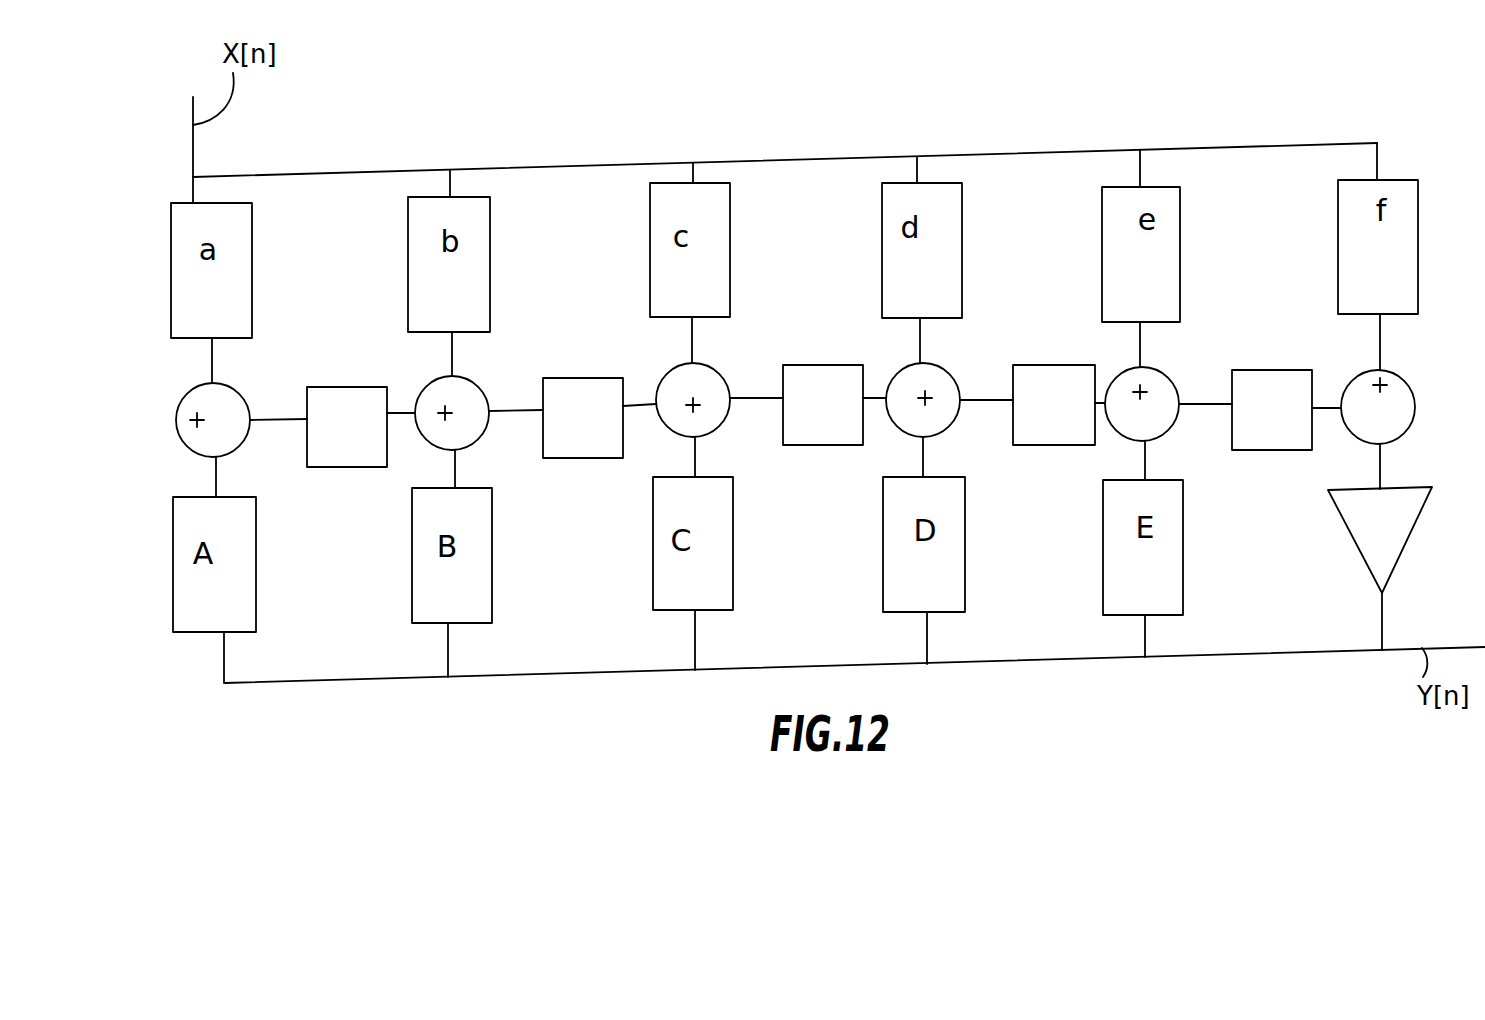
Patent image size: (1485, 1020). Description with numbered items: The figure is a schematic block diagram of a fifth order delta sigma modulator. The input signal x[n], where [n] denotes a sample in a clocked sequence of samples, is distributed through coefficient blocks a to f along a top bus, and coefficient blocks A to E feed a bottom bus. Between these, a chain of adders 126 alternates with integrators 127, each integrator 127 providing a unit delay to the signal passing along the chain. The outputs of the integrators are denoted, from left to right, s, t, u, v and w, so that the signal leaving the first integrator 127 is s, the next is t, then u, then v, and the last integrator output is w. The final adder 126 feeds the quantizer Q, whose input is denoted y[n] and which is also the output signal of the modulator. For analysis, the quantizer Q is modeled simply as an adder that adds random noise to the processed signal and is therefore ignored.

The adder 126 is at (237, 388).
The integrator 127 is at (343, 382).
The integrator output s is at (407, 425).
The integrator output t is at (648, 415).
The integrator output u is at (882, 407).
The integrator output v is at (1103, 408).
The integrator output w is at (1332, 410).
The quantizer Q is at (1393, 537).